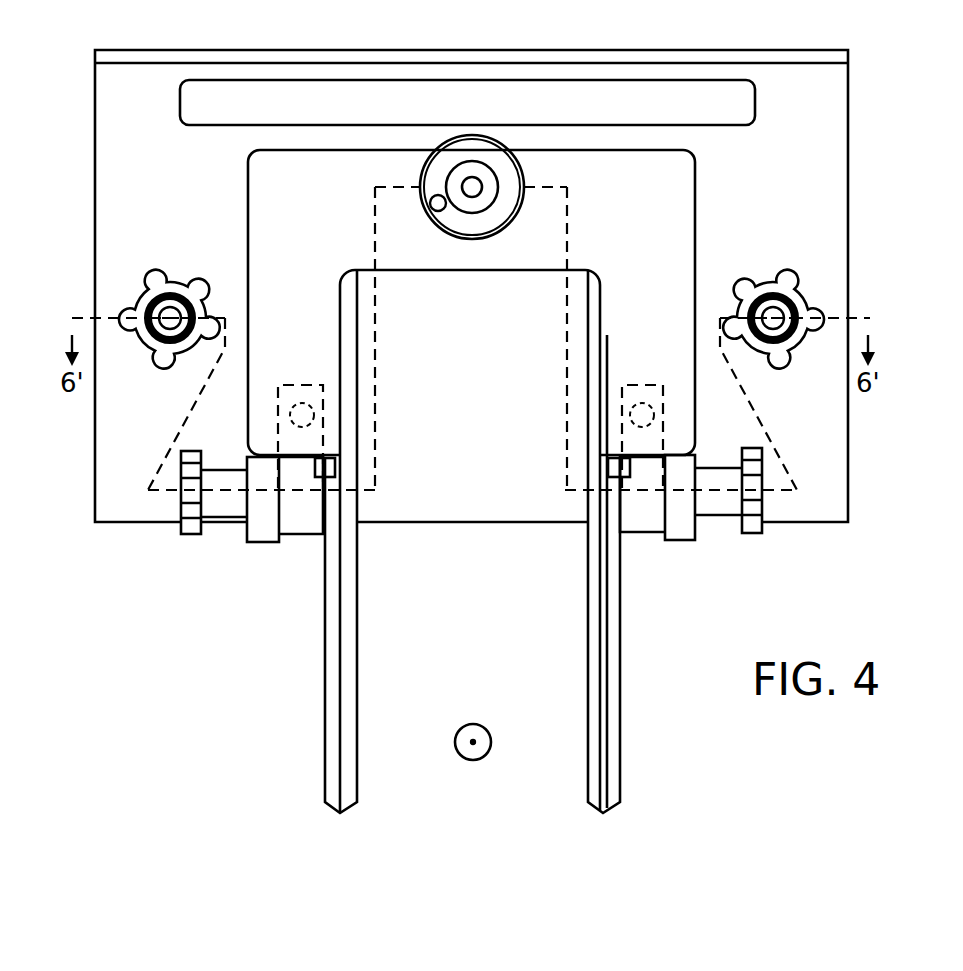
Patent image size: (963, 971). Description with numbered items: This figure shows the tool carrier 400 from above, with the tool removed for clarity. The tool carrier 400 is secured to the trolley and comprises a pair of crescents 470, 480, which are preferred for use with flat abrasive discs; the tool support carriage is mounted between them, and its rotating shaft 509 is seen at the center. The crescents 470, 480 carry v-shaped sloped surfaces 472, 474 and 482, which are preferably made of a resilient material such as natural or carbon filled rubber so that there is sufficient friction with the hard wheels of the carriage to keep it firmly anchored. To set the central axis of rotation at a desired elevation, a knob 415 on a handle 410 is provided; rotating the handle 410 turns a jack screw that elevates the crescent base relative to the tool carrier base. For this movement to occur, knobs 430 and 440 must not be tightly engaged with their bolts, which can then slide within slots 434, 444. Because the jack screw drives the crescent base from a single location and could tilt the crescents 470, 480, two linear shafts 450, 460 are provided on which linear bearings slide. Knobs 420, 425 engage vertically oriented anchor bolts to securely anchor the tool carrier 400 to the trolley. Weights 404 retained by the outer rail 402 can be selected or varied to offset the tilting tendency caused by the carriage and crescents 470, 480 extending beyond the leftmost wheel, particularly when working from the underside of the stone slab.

The tool carrier 400 is at (110, 26).
The outer rail 402 is at (712, 55).
The weights 404 is at (722, 115).
The handle 410 is at (512, 200).
The knob 415 is at (432, 204).
The knob 420 is at (780, 278).
The knob 425 is at (183, 278).
The knob 430 is at (750, 520).
The slot 434 is at (678, 540).
The knob 440 is at (192, 518).
The slot 444 is at (265, 540).
The linear shaft 450 is at (640, 405).
The linear shaft 460 is at (302, 408).
The crescent 470 is at (316, 760).
The v-shaped sloped surface 472 is at (335, 722).
The v-shaped sloped surface 474 is at (350, 668).
The crescent 480 is at (628, 759).
The v-shaped sloped surface 482 is at (616, 690).
The rotating shaft 509 is at (478, 730).